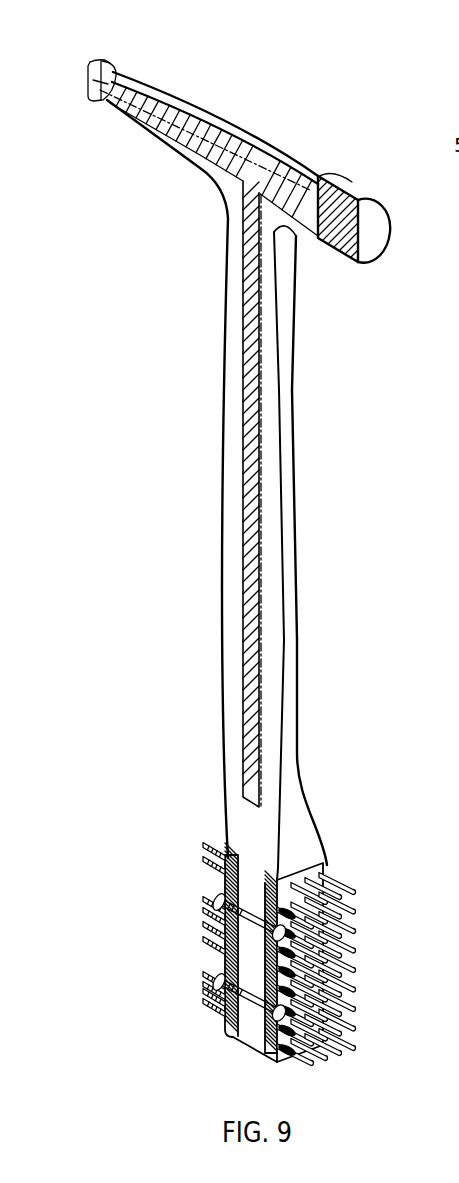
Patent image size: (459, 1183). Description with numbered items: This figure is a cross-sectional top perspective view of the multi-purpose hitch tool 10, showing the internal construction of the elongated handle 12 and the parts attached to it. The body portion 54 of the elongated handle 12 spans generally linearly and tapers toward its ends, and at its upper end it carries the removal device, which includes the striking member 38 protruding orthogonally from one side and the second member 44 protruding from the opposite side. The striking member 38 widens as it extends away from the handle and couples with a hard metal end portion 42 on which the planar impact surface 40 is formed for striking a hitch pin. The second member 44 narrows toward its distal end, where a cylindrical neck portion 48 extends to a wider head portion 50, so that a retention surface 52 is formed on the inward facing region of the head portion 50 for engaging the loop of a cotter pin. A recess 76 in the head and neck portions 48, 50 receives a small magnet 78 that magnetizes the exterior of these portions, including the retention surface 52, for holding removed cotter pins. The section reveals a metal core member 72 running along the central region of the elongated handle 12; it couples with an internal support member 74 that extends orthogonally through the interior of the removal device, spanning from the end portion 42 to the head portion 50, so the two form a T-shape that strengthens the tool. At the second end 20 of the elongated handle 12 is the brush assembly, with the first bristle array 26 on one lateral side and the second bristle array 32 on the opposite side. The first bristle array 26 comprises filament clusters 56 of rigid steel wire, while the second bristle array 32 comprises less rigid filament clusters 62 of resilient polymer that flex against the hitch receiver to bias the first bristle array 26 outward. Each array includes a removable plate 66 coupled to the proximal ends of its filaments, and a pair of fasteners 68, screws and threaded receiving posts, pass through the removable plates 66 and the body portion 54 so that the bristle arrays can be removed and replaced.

The multi-purpose hitch tool 10 is at (233, 576).
The elongated handle 12 is at (212, 450).
The second end 20 is at (283, 960).
The first bristle array 26 is at (333, 1076).
The second bristle array 32 is at (176, 944).
The striking member 38 is at (329, 248).
The planar impact surface 40 is at (374, 249).
The end portion 42 is at (343, 185).
The second member 44 is at (172, 133).
The neck portion 48 is at (110, 100).
The head portion 50 is at (92, 62).
The retention surface 52 is at (113, 78).
The body portion 54 is at (287, 530).
The filament clusters 56 is at (336, 1003).
The filament clusters 62 is at (203, 872).
The removable plate 66 is at (230, 868).
The fasteners 68 is at (217, 900).
The core member 72 is at (252, 580).
The internal support member 74 is at (188, 133).
The recess 76 is at (98, 79).
The magnet 78 is at (93, 80).